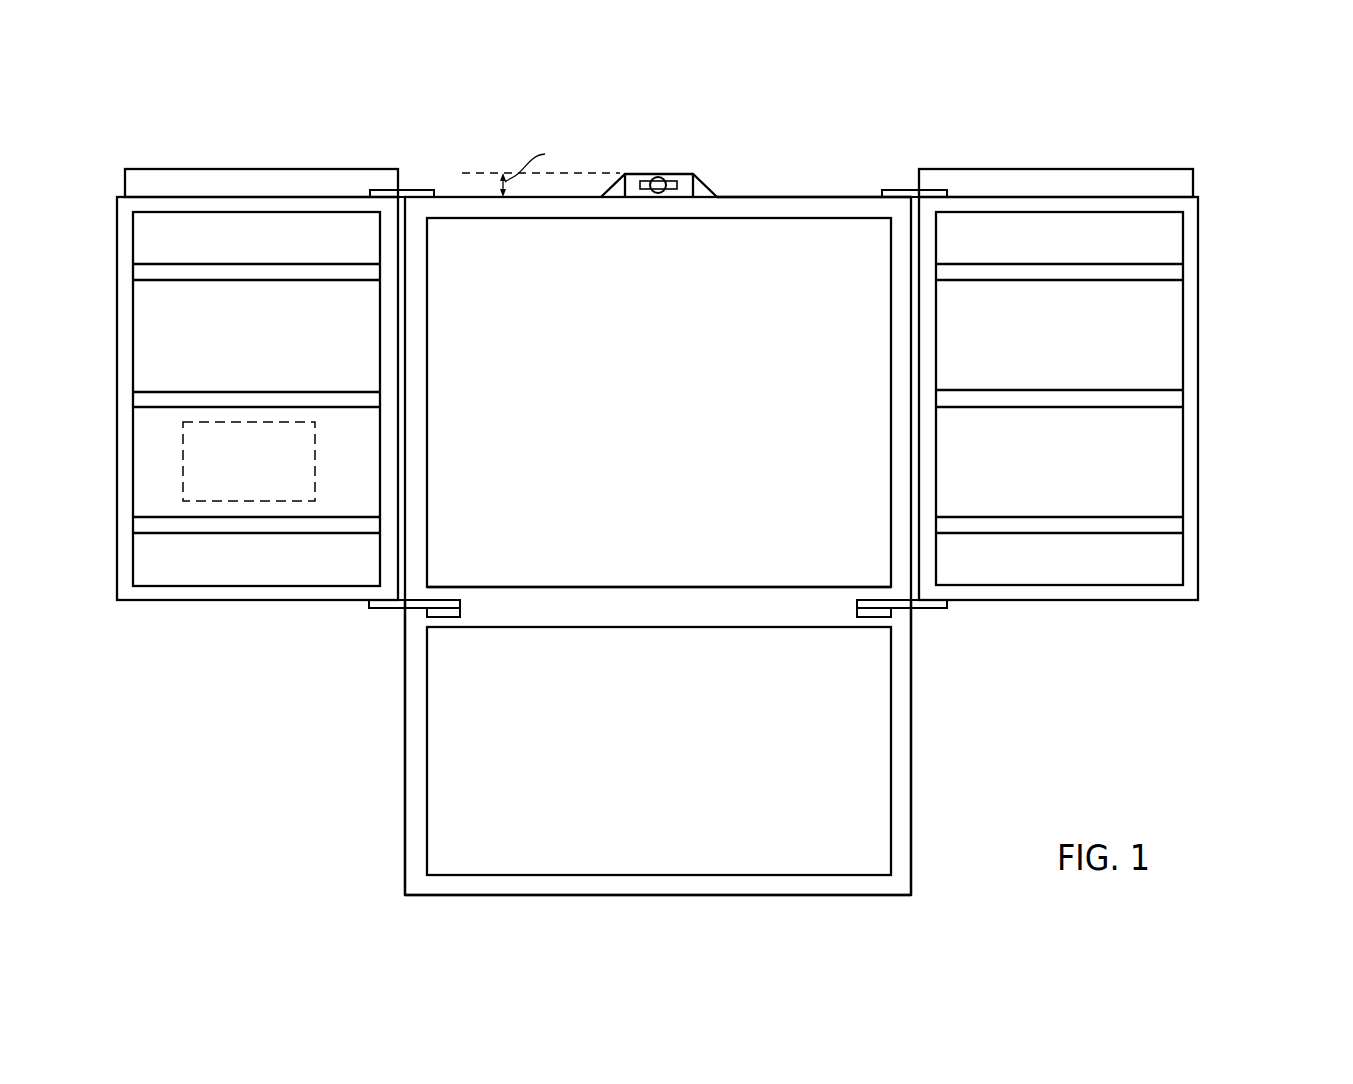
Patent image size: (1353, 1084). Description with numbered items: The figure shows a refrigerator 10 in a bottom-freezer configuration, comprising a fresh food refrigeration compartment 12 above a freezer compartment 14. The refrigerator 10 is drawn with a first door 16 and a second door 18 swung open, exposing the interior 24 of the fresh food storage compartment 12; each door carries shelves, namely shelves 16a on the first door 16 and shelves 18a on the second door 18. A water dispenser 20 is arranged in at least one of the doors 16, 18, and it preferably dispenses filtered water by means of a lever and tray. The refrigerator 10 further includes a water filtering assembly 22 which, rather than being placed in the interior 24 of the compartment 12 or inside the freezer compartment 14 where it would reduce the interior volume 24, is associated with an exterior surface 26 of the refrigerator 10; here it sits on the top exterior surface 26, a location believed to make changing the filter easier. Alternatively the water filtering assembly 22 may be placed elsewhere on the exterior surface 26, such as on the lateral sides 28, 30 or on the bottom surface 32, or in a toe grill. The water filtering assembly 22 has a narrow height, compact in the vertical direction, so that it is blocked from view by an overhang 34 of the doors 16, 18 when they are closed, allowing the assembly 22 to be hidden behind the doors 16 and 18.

The refrigerator 10 is at (1252, 166).
The fresh food refrigeration compartment 12 is at (830, 225).
The freezer compartment 14 is at (881, 722).
The first door 16 is at (240, 196).
The shelves 16a is at (275, 264).
The second door 18 is at (1110, 196).
The shelves 18a is at (1077, 264).
The water dispenser 20 is at (183, 462).
The water filtering assembly 22 is at (652, 140).
The interior 24 is at (490, 587).
The exterior surface 26 is at (755, 197).
The lateral side 28 is at (405, 712).
The lateral side 30 is at (911, 760).
The bottom surface 32 is at (685, 895).
The overhang 34 is at (147, 169).